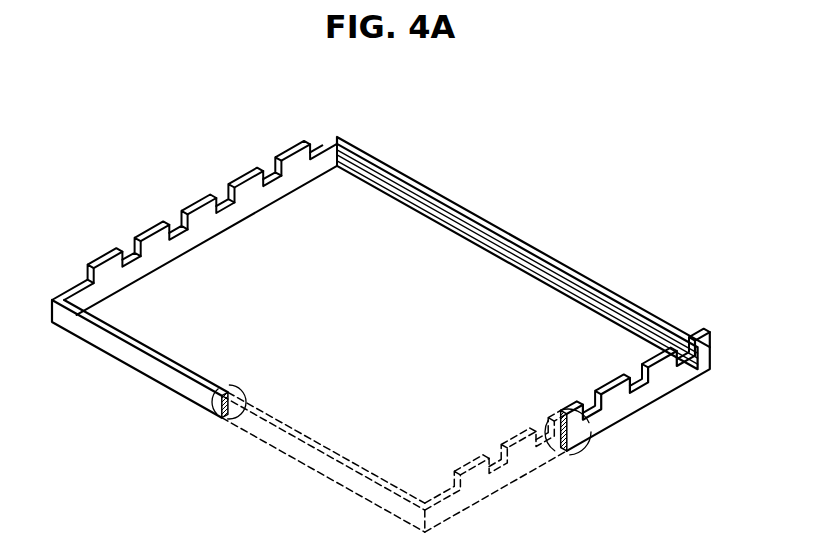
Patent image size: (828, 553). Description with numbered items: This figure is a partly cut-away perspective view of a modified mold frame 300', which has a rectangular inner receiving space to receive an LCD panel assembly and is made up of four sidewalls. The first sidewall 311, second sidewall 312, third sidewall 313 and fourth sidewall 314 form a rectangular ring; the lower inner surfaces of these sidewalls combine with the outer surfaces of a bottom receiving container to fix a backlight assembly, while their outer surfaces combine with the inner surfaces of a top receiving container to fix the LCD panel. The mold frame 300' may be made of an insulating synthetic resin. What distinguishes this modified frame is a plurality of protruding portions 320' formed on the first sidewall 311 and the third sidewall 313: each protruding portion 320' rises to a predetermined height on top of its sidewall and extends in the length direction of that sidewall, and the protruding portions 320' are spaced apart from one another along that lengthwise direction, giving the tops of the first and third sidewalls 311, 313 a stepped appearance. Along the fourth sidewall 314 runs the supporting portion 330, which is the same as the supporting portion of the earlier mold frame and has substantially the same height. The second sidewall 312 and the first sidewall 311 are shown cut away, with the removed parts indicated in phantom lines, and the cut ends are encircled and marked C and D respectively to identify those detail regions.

The mold frame 300' is at (392, 298).
The first sidewall 311 is at (605, 425).
The second sidewall 312 is at (130, 357).
The third sidewall 313 is at (170, 247).
The fourth sidewall 314 is at (648, 310).
The protruding portions 320' is at (395, 313).
The supporting portion 330 is at (505, 252).
The detail region C is at (236, 384).
The detail region D is at (574, 458).